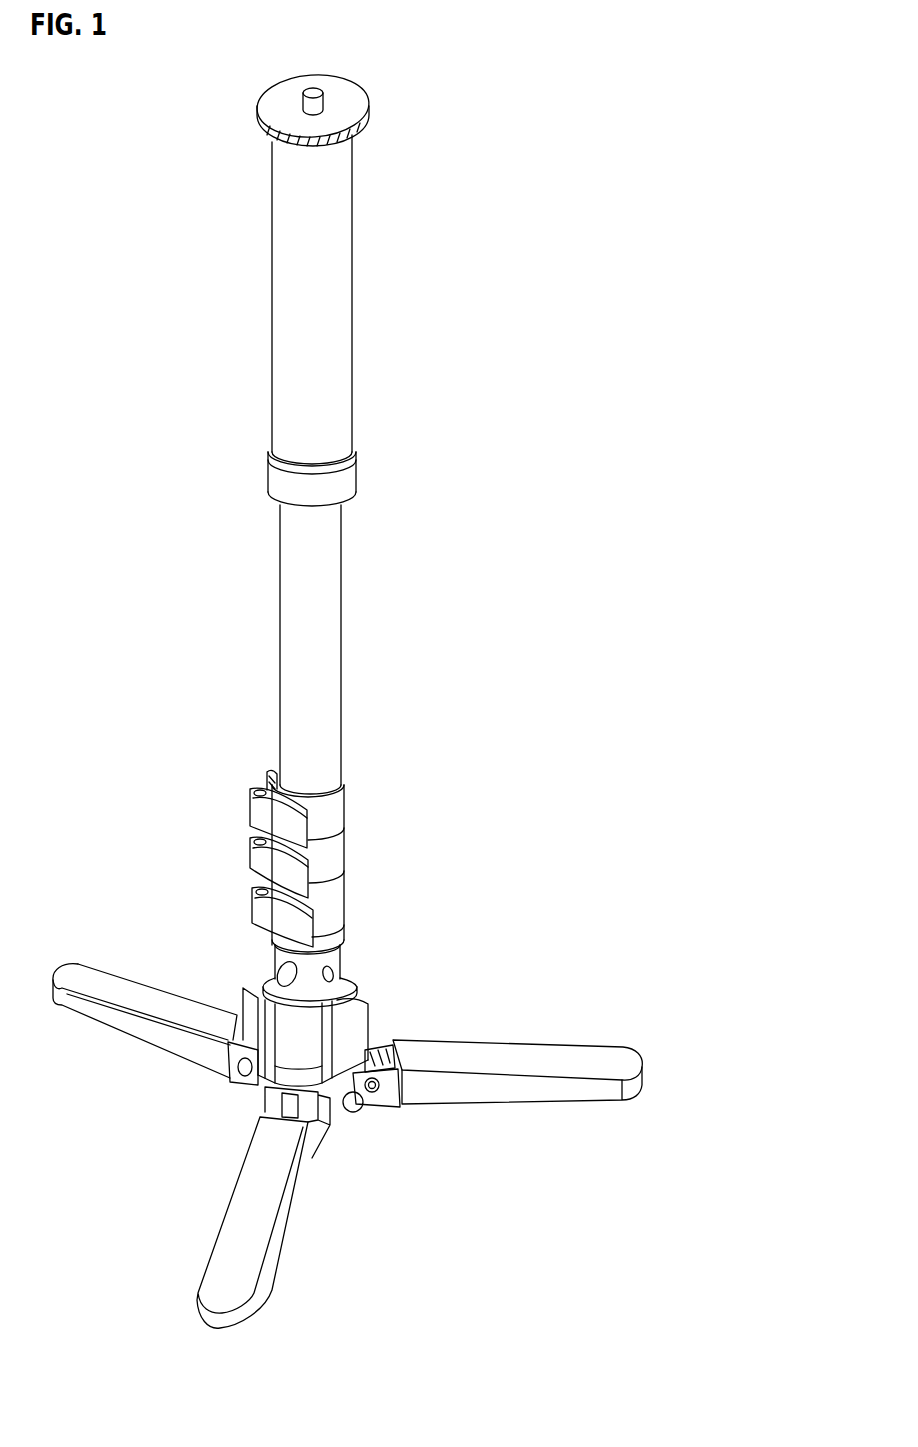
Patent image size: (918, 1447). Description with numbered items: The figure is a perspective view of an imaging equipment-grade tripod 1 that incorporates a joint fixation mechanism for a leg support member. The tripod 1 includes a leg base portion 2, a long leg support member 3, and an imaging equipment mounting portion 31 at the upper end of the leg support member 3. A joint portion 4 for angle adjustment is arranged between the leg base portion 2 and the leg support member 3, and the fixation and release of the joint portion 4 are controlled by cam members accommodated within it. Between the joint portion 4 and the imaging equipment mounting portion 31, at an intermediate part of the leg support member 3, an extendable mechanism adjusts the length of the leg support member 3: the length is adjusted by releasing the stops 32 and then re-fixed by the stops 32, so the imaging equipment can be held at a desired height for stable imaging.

The imaging equipment-grade tripod 1 is at (407, 380).
The leg base portion 2 is at (380, 1035).
The leg support member 3 is at (273, 630).
The joint portion 4 is at (357, 947).
The imaging equipment mounting portion 31 is at (327, 123).
The stops 32 is at (330, 808).